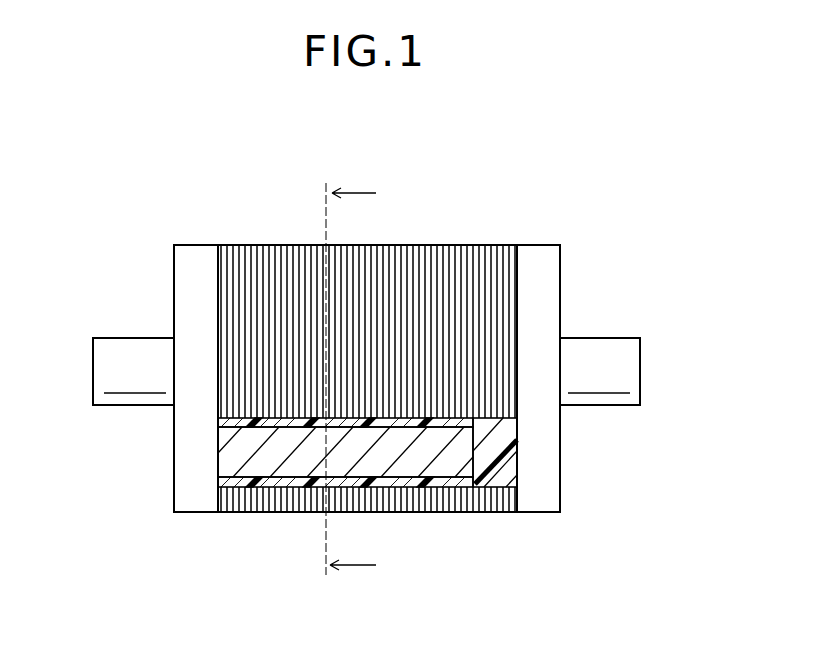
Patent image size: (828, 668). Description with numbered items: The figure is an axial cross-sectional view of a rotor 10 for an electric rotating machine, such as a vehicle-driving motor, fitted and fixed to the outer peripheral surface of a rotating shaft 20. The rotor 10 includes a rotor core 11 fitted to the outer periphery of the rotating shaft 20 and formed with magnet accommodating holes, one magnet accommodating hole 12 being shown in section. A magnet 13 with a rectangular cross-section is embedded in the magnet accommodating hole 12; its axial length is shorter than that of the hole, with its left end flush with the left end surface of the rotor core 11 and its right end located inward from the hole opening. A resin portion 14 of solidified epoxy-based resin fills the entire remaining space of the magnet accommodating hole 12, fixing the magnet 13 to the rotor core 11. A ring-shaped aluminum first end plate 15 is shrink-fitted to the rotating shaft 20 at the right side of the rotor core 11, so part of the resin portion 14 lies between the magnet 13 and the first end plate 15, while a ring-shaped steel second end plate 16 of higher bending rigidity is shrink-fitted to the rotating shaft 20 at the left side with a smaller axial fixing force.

The rotor 10 is at (443, 180).
The rotor core 11 is at (268, 245).
The magnet accommodating hole 12 is at (270, 476).
The magnet 13 is at (413, 463).
The resin portion 14 is at (490, 458).
The first end plate 15 is at (538, 245).
The second end plate 16 is at (200, 245).
The rotating shaft 20 is at (110, 335).